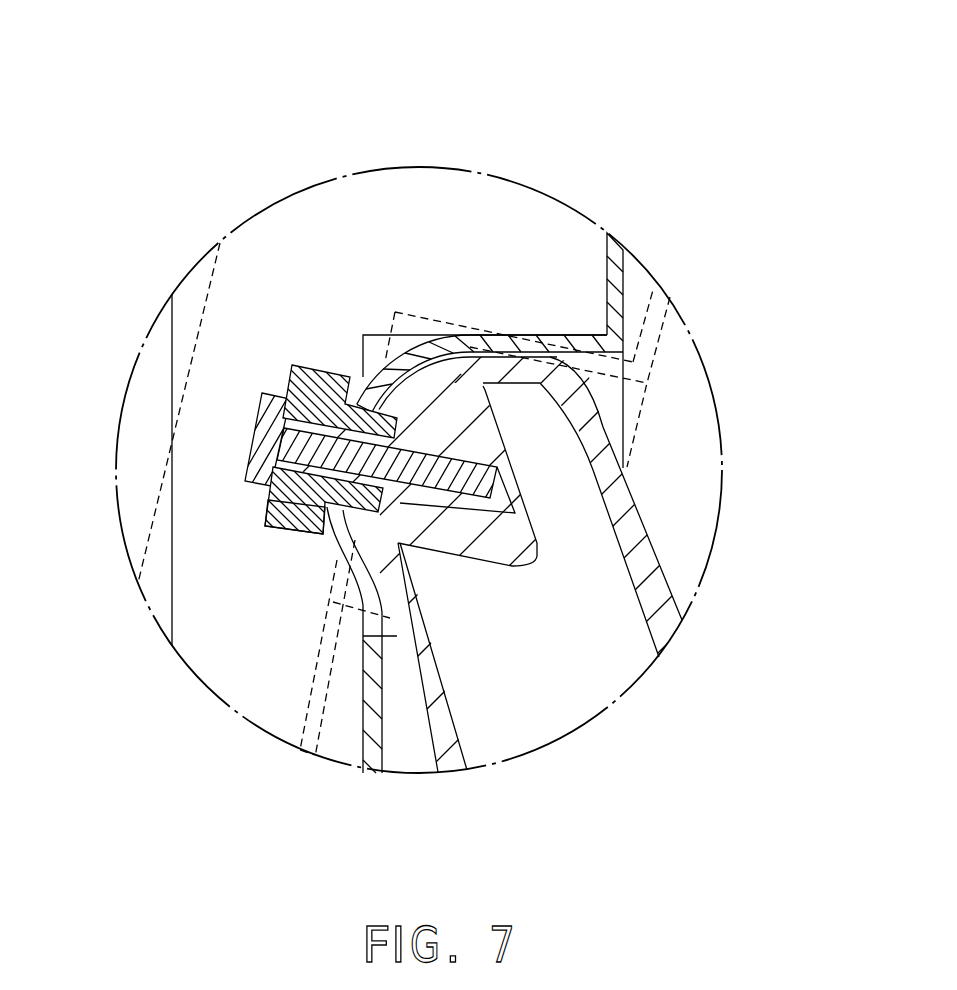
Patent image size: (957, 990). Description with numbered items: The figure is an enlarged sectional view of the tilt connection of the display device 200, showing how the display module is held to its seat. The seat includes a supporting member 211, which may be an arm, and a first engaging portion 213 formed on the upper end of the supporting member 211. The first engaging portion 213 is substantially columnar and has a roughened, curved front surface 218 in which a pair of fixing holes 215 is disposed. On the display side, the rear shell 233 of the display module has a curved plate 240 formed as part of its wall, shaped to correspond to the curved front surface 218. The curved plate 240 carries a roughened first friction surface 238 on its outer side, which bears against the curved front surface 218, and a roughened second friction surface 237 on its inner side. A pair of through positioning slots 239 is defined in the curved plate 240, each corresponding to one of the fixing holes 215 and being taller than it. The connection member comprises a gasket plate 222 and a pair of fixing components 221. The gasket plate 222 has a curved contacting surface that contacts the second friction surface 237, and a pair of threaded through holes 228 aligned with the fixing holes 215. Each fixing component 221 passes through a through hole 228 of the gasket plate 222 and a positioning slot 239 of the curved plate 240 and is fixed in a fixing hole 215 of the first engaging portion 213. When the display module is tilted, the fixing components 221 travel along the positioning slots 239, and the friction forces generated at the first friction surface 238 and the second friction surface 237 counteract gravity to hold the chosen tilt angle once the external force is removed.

The electronic device assembly 200 is at (393, 90).
The supporting member 211 is at (647, 578).
The first engaging portion 213 is at (457, 422).
The fixing holes 215 is at (497, 492).
The curved front surface 218 is at (415, 358).
The fixing components 221 is at (290, 449).
The gasket plate 222 is at (295, 506).
The through holes 228 is at (312, 478).
The rear shell 233 is at (610, 275).
The second friction surface 237 is at (370, 360).
The first friction surface 238 is at (428, 358).
The positioning slots 239 is at (358, 580).
The curved plate 240 is at (498, 338).